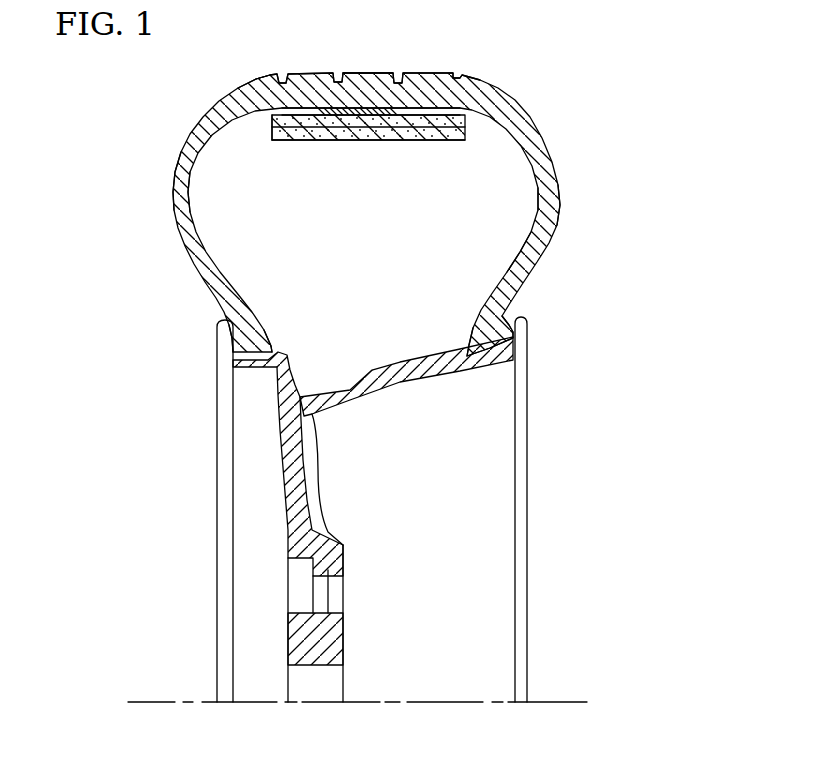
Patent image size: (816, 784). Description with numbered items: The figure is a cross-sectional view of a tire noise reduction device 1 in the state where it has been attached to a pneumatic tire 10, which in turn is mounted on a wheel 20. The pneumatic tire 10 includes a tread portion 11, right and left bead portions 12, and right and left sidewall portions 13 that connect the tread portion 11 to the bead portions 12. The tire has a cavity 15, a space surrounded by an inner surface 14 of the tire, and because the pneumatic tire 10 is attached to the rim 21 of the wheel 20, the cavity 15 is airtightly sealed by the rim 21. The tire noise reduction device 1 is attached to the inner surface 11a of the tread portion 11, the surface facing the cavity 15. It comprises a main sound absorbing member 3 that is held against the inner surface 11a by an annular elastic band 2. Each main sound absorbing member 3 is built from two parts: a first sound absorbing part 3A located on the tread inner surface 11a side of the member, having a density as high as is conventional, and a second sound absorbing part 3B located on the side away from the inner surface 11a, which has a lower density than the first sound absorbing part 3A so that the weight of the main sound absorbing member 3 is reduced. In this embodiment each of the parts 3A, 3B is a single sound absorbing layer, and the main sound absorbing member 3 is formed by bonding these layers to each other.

The tire noise reduction device 1 is at (414, 143).
The annular elastic band 2 is at (368, 72).
The main sound absorbing member 3 is at (372, 143).
The first sound absorbing part 3A is at (258, 78).
The second sound absorbing part 3B is at (283, 141).
The pneumatic tire 10 is at (542, 118).
The tread portion 11 is at (427, 75).
The inner surface of the tread portion 11a is at (322, 141).
The bead portion 12 is at (270, 345).
The sidewall portion 13 is at (176, 204).
The inner surface 14 is at (518, 248).
The cavity 15 is at (352, 269).
The wheel 20 is at (528, 607).
The rim 21 is at (398, 385).